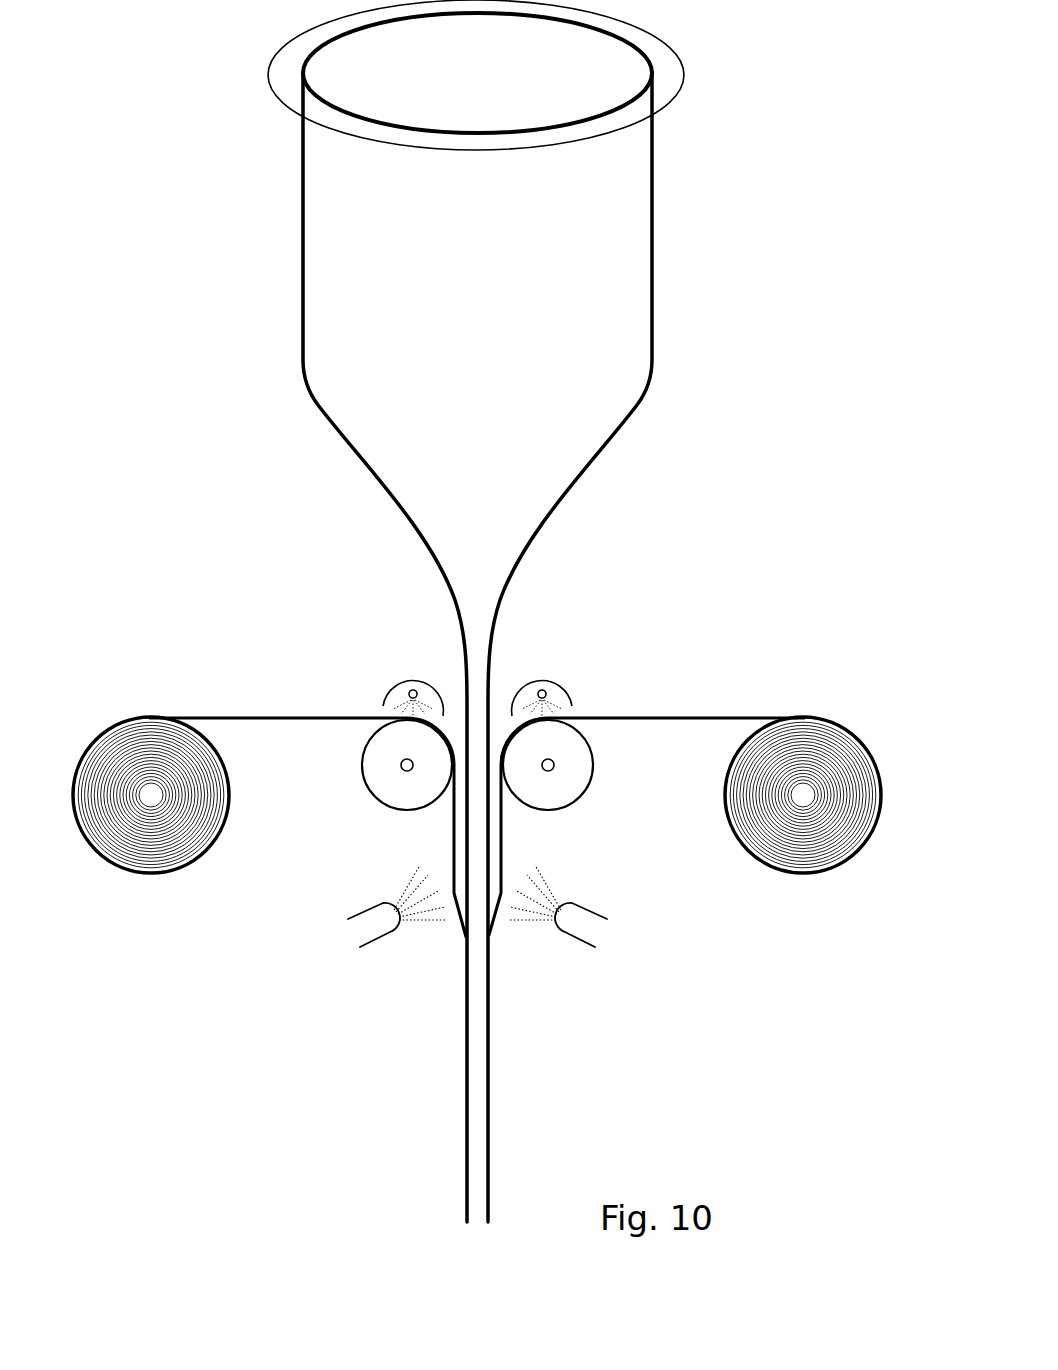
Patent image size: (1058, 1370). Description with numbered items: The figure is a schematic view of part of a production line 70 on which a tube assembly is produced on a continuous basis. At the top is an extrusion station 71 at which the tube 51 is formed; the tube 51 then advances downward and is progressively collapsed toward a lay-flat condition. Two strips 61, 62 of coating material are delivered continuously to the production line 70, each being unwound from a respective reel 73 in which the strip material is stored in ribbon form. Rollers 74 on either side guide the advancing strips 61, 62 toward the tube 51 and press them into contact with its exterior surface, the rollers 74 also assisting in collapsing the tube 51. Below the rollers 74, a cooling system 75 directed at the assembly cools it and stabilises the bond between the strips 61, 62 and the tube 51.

The production line 70 is at (184, 388).
The extrusion station 71 is at (676, 151).
The tube 51 is at (652, 303).
The strip 61 is at (450, 832).
The strip 62 is at (503, 843).
The reel 73 is at (118, 838).
The roller 74 is at (377, 780).
The cooling system 75 is at (585, 925).